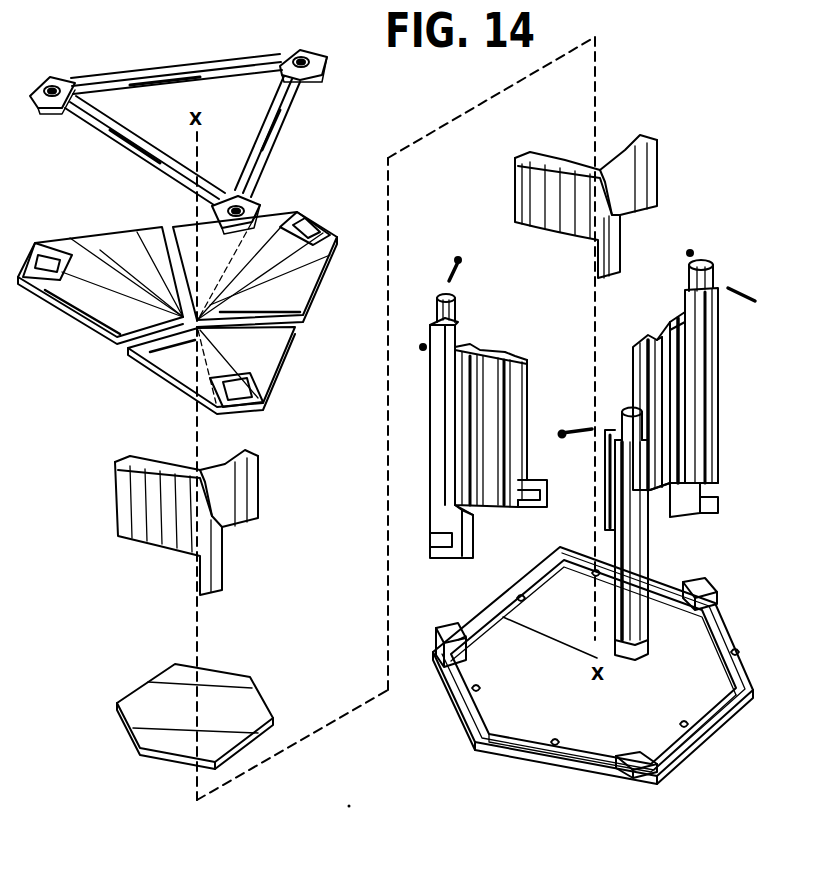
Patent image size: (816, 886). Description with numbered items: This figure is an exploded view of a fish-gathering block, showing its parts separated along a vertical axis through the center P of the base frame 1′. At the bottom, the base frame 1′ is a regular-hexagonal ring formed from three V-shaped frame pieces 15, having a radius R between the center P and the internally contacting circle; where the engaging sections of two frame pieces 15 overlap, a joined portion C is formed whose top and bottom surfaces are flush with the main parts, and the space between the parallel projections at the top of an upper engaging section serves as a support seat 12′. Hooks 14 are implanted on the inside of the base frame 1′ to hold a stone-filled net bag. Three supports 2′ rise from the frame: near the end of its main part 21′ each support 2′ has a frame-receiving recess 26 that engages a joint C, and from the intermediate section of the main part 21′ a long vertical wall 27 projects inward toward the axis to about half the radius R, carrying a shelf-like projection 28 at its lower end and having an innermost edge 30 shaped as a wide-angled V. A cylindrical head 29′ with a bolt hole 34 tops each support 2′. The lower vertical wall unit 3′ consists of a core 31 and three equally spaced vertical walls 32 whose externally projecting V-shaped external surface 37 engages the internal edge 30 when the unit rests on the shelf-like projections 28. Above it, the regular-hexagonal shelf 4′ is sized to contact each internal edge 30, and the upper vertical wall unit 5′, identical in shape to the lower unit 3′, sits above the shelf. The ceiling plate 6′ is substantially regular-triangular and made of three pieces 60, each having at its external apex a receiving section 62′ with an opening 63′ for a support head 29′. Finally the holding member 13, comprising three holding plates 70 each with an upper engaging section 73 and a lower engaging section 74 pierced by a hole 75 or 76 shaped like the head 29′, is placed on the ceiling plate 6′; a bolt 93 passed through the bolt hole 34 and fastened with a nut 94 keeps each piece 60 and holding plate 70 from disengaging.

The holding member 13 is at (196, 126).
The holding plate 70 is at (166, 68).
The upper engaging section 73 is at (282, 60).
The lower engaging section 74 is at (42, 104).
The hole 75 is at (310, 54).
The hole 76 is at (318, 63).
The ceiling plate 6′ is at (200, 281).
The piece 60 is at (100, 315).
The receiving section 62′ is at (303, 232).
The opening 63′ is at (312, 246).
The upper vertical wall unit 5′ is at (262, 488).
The shelf 4′ is at (264, 695).
The lower vertical wall unit 3′ is at (578, 190).
The core 31 is at (599, 172).
The vertical wall 32 is at (650, 172).
The external surface 37 is at (512, 172).
The main part 21′ is at (488, 400).
The bolt hole 34 is at (436, 306).
The cylindrical head 29′ is at (456, 300).
The vertical wall 27 is at (515, 355).
The innermost edge 30 is at (528, 385).
The frame-receiving recess 26 is at (440, 540).
The shelf-like projection 28 is at (531, 491).
The bolt 93 is at (455, 266).
The nut 94 is at (422, 344).
The support 2′ is at (430, 450).
The base frame 1′ is at (598, 665).
The frame piece 15 is at (470, 620).
The support seat 12′ is at (467, 642).
The hook 14 is at (478, 688).
The joined portion C is at (440, 630).
The radius R is at (550, 637).
The center P is at (612, 717).